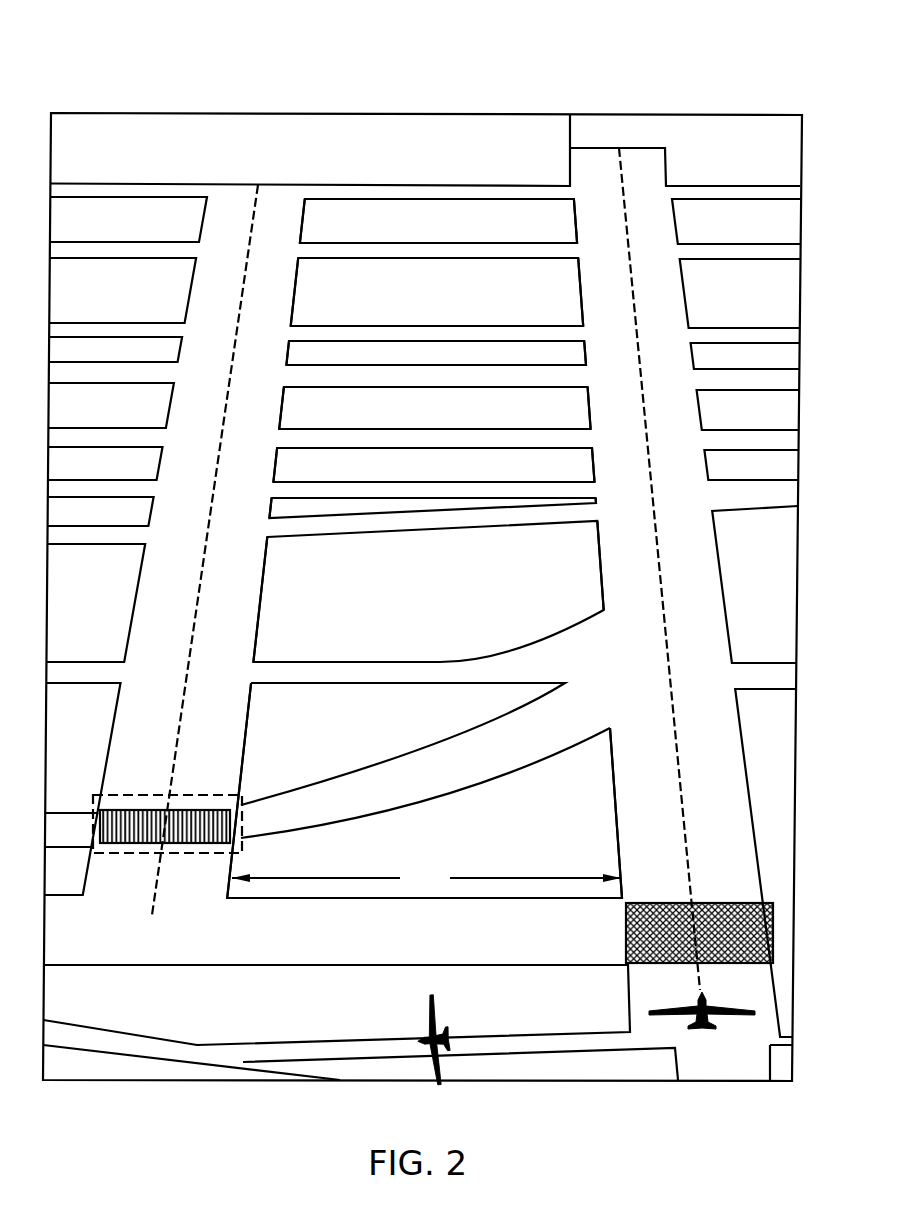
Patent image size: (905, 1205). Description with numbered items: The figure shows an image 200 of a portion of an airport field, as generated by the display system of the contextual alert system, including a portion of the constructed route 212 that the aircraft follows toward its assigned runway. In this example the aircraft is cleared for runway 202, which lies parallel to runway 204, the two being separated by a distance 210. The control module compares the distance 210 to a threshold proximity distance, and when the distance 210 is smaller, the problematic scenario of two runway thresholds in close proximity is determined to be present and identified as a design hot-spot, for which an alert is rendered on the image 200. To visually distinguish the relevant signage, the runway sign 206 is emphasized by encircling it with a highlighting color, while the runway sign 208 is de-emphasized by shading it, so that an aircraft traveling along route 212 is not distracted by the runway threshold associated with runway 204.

The image 200 is at (125, 113).
The runway 202 is at (148, 601).
The runway 204 is at (700, 607).
The runway sign 206 is at (150, 795).
The runway sign 208 is at (662, 903).
The distance 210 is at (426, 879).
The route 212 is at (405, 950).